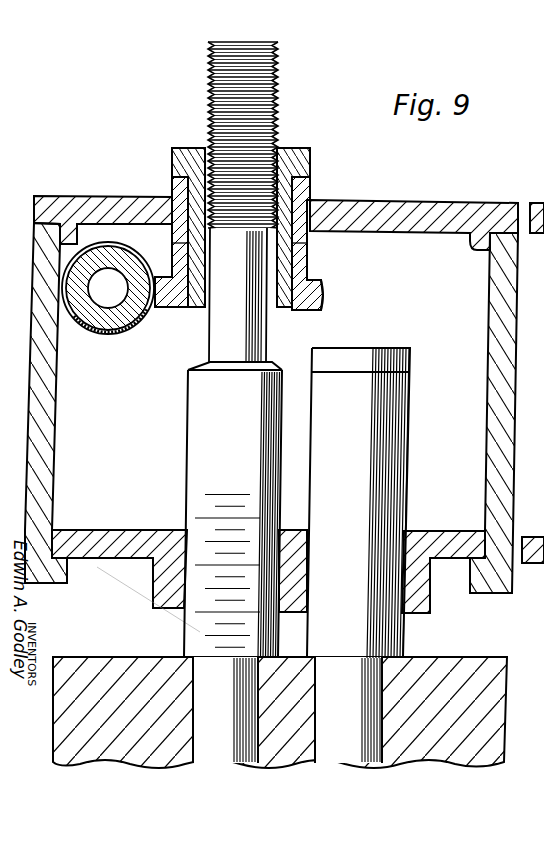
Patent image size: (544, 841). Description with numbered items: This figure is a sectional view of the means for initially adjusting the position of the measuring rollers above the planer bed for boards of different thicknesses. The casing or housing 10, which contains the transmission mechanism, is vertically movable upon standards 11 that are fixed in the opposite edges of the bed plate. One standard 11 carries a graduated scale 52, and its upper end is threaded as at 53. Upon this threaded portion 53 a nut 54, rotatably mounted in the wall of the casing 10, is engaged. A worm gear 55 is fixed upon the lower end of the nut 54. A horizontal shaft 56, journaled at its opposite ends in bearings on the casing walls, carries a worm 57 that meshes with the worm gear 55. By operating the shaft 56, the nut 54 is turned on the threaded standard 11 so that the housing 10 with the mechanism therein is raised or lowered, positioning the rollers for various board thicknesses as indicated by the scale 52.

The casing or housing 10 is at (25, 392).
The standards 11 is at (397, 495).
The graduated scale 52 is at (218, 590).
The threaded portion 53 is at (208, 125).
The nut 54 is at (310, 172).
The worm gear 55 is at (322, 286).
The horizontal shaft 56 is at (110, 333).
The worm 57 is at (138, 325).